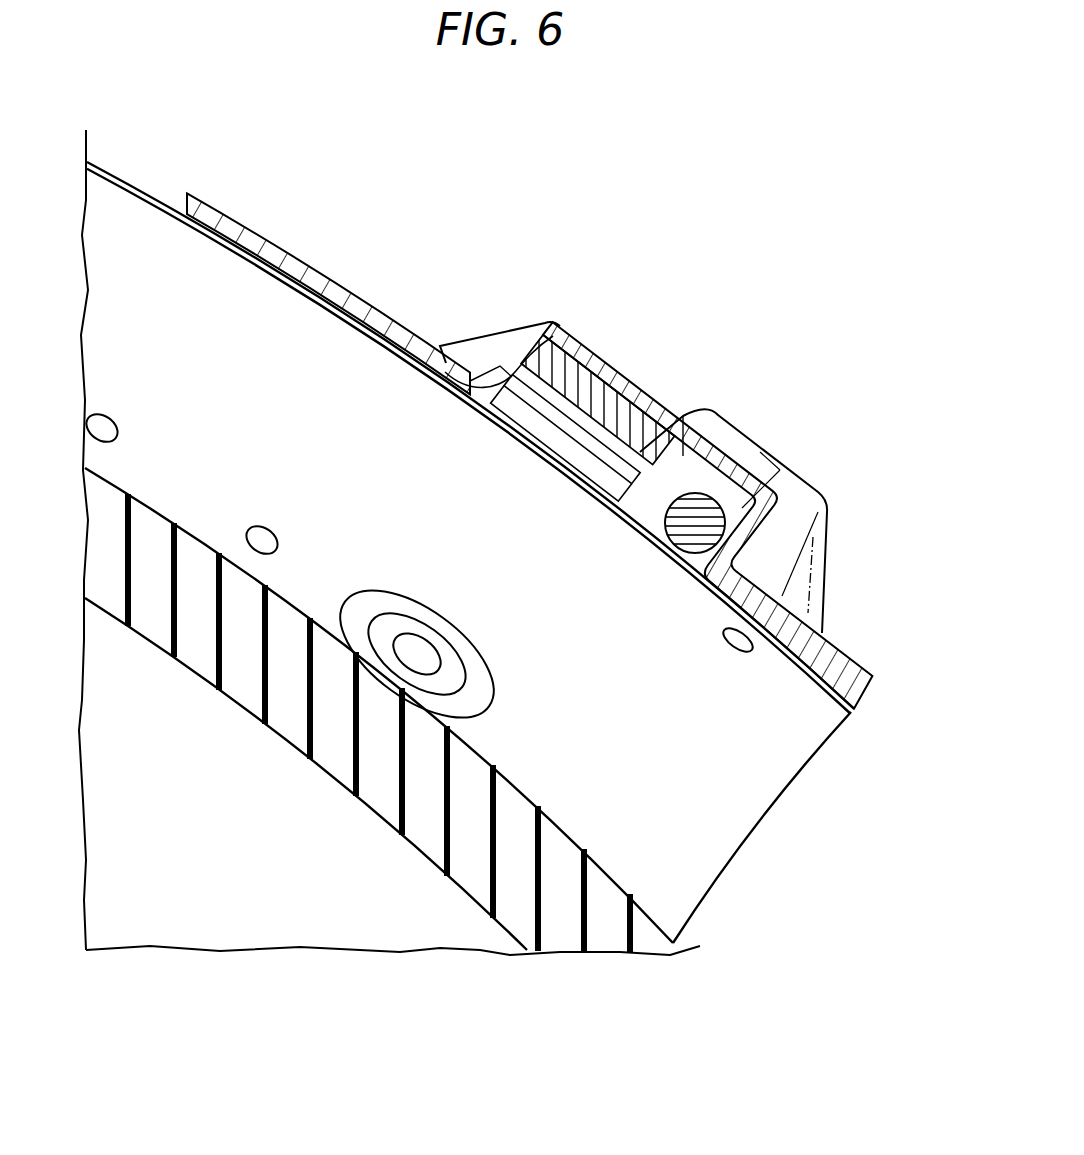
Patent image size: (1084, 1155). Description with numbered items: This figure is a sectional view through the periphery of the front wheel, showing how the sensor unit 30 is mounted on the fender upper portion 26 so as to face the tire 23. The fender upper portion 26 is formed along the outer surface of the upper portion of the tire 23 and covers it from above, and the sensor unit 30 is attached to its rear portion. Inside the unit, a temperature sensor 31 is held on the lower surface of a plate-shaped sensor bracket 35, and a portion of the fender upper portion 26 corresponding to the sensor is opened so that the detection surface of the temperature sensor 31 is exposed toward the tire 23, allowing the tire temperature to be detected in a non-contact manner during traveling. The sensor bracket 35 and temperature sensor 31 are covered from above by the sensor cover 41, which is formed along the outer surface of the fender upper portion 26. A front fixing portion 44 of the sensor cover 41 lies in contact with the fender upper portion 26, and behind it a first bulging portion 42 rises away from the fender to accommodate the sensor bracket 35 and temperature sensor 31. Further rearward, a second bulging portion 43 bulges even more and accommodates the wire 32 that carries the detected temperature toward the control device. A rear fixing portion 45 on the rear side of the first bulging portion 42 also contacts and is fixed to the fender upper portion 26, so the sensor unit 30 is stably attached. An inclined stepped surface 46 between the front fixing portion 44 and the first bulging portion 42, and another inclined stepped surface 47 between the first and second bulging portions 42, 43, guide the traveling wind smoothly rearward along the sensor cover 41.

The tire 23 is at (190, 534).
The fender upper portion 26 is at (140, 188).
The sensor unit 30 is at (556, 435).
The temperature sensor 31 is at (386, 624).
The wire 32 is at (708, 494).
The sensor bracket 35 is at (618, 372).
The sensor cover 41 is at (768, 407).
The first bulging portion 42 is at (590, 322).
The second bulging portion 43 is at (790, 472).
The front fixing portion 44 is at (322, 266).
The rear fixing portion 45 is at (858, 664).
The stepped surface 46 is at (476, 326).
The stepped surface 47 is at (683, 402).